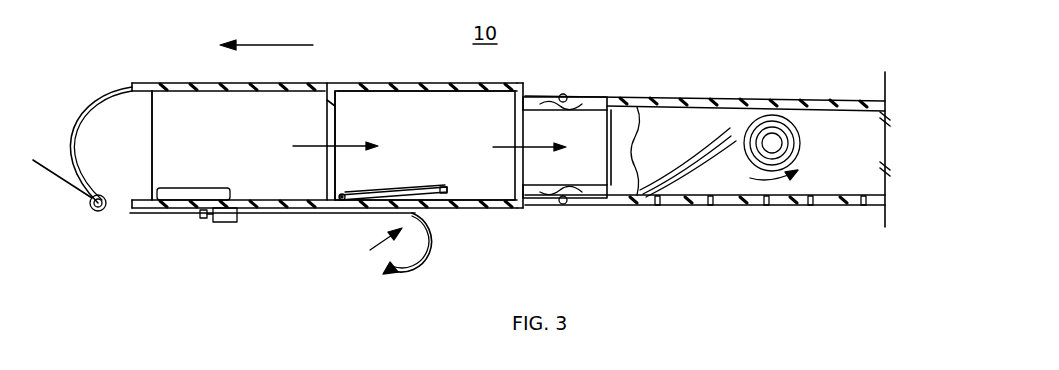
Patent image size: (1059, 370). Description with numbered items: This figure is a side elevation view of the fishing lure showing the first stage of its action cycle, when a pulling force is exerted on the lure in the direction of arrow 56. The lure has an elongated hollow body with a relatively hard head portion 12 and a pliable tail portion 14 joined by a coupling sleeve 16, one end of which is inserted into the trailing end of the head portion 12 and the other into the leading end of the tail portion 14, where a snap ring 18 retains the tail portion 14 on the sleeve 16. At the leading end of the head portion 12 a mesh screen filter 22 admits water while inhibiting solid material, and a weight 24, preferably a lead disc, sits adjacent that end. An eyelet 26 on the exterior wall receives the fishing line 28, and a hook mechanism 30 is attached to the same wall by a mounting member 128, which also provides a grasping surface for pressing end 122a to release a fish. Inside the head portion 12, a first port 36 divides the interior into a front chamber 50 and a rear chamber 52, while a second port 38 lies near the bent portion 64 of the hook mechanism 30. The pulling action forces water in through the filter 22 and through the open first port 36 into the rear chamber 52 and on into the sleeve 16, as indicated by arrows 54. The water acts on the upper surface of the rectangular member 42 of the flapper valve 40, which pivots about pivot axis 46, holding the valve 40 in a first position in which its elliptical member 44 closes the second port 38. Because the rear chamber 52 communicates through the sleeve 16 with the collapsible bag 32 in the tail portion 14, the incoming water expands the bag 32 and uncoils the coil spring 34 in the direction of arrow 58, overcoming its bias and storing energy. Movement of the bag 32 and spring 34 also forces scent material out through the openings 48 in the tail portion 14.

The head portion 12 is at (180, 82).
The tail portion 14 is at (791, 102).
The coupling sleeve 16 is at (600, 110).
The snap ring 18 is at (565, 91).
The mesh screen filter 22 is at (108, 99).
The weight 24 is at (182, 189).
The eyelet 26 is at (111, 217).
The fishing line 28 is at (68, 183).
The hook mechanism 30 is at (371, 249).
The collapsible bag 32 is at (683, 112).
The coil spring 34 is at (783, 141).
The first port 36 is at (325, 122).
The second port 38 is at (418, 211).
The valve 40 is at (433, 176).
The rectangular member 42 is at (387, 188).
The elliptical member 44 is at (444, 196).
The pivot axis 46 is at (345, 202).
The openings 48 is at (658, 206).
The front chamber 50 is at (316, 100).
The rear chamber 52 is at (460, 98).
The arrows 54 is at (348, 142).
The arrow 56 is at (266, 32).
The arrow 58 is at (786, 180).
The bent portion 64 is at (428, 260).
The end 122a is at (194, 220).
The mounting member 128 is at (228, 223).